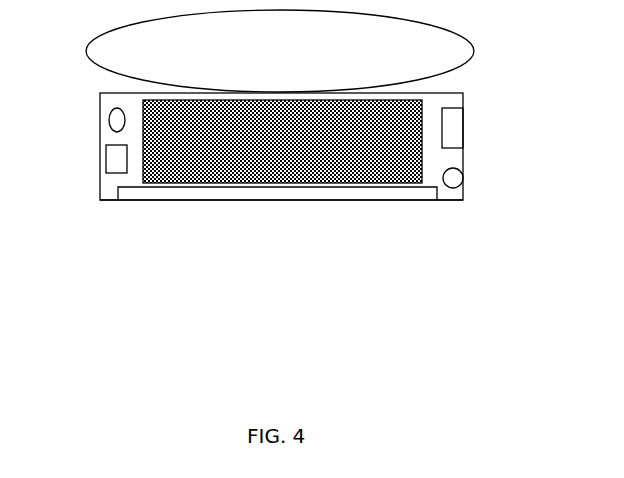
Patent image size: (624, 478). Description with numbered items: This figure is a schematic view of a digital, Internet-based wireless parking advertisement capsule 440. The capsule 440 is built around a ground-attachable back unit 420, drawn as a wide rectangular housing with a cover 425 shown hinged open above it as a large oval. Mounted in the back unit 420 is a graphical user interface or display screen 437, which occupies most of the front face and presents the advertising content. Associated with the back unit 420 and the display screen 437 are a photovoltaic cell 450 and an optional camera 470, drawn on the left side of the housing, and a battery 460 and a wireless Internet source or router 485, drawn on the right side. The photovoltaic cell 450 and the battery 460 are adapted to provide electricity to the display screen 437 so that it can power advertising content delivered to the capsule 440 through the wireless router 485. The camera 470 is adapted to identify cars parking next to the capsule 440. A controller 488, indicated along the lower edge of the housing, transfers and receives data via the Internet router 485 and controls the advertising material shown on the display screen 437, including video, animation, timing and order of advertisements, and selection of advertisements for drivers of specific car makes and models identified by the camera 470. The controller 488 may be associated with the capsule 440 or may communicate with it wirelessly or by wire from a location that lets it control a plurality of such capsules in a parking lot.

The cover 425 is at (96, 66).
The wireless parking advertisement capsule 440 is at (92, 235).
The display screen 437 is at (143, 101).
The photovoltaic cell 450 is at (109, 120).
The camera 470 is at (106, 159).
The ground-attachable back unit 420 is at (105, 192).
The battery 460 is at (465, 127).
The wireless Internet source or router 485 is at (464, 177).
The controller 488 is at (277, 200).